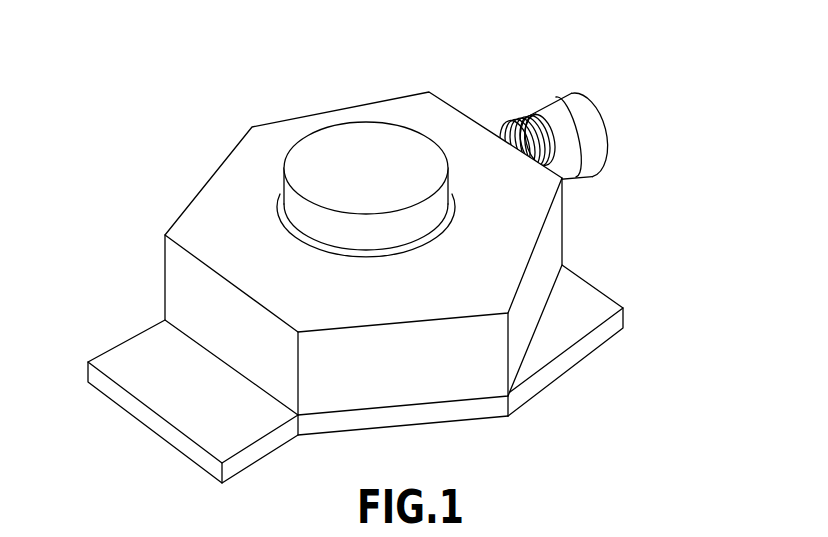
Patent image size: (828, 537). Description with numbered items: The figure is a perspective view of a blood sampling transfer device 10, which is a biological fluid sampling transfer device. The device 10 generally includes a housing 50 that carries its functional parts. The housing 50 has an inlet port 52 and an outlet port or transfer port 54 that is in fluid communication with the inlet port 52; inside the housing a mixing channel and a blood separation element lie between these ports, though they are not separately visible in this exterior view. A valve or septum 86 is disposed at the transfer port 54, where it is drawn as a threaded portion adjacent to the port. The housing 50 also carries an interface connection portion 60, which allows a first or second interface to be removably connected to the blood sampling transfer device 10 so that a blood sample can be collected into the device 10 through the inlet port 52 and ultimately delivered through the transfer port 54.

The blood sampling transfer device 10 is at (355, 246).
The housing 50 is at (480, 367).
The inlet port 52 is at (349, 92).
The transfer port 54 is at (536, 99).
The interface connection portion 60 is at (290, 200).
The septum 86 is at (503, 115).